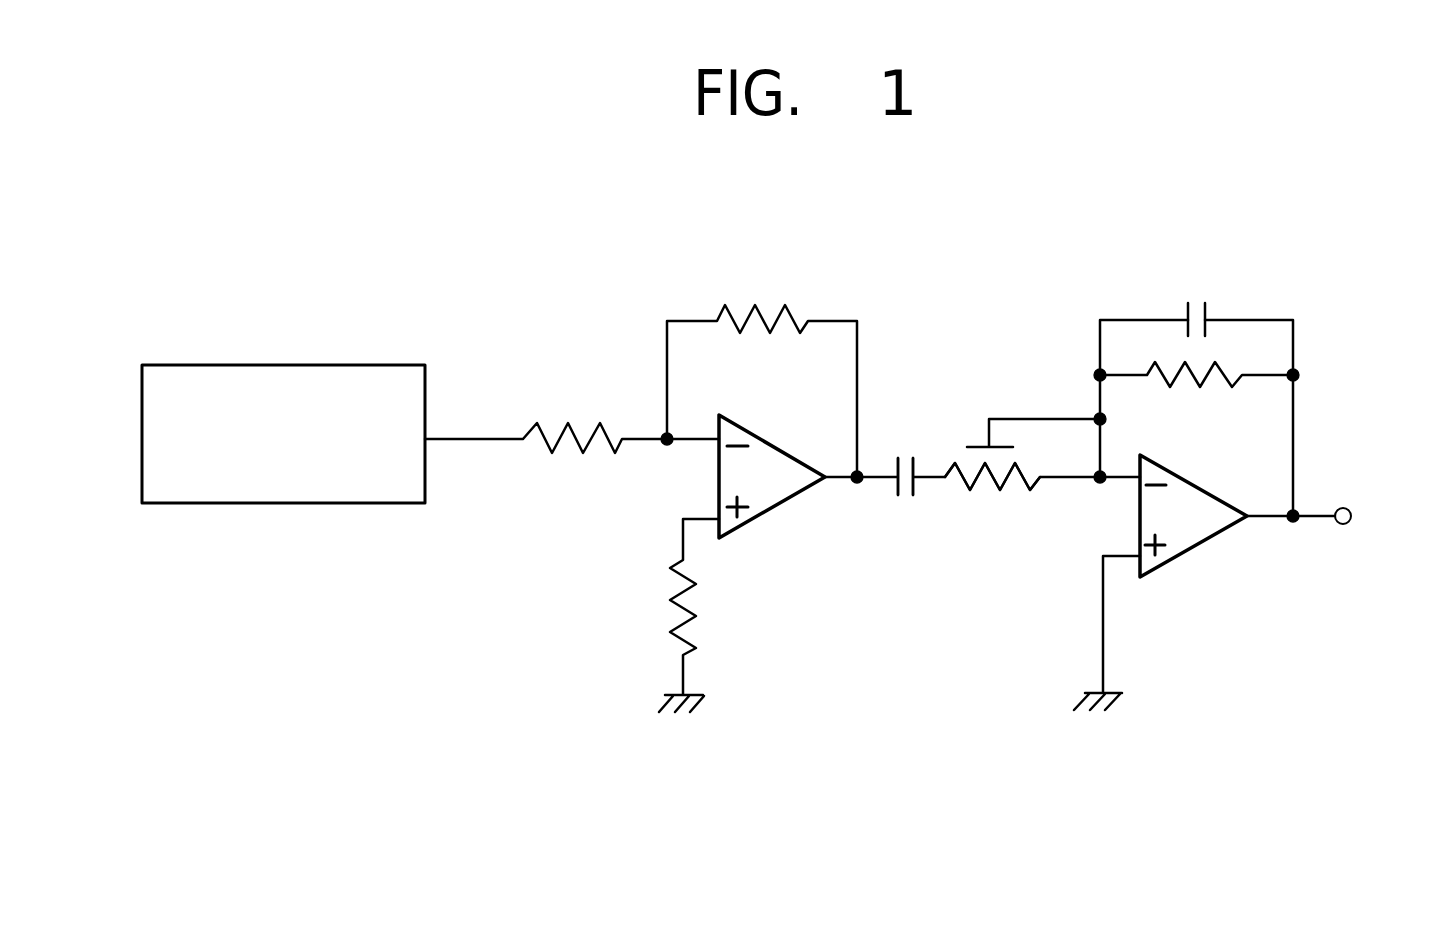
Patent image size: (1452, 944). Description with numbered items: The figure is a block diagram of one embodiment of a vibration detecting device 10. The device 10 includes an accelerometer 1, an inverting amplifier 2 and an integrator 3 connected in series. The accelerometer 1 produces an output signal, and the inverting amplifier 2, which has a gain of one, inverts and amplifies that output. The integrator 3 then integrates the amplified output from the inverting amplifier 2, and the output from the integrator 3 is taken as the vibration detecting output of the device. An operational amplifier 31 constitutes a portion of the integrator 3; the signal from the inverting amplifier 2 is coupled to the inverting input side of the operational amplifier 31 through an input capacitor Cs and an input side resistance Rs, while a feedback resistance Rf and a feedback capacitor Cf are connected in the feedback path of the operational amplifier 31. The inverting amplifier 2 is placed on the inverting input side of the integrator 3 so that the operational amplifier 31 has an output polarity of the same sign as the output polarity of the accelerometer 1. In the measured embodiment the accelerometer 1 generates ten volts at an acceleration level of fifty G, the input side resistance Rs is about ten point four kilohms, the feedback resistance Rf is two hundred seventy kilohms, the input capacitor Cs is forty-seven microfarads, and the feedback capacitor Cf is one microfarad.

The accelerometer 1 is at (340, 503).
The inverting amplifier 2 is at (768, 512).
The integrator 3 is at (1261, 457).
The operational amplifier 31 is at (1220, 535).
The vibration detecting device 10 is at (982, 561).
The input capacitor Cs is at (902, 497).
The input side resistance Rs is at (992, 524).
The feedback capacitor Cf is at (1194, 300).
The feedback resistance Rf is at (1213, 383).